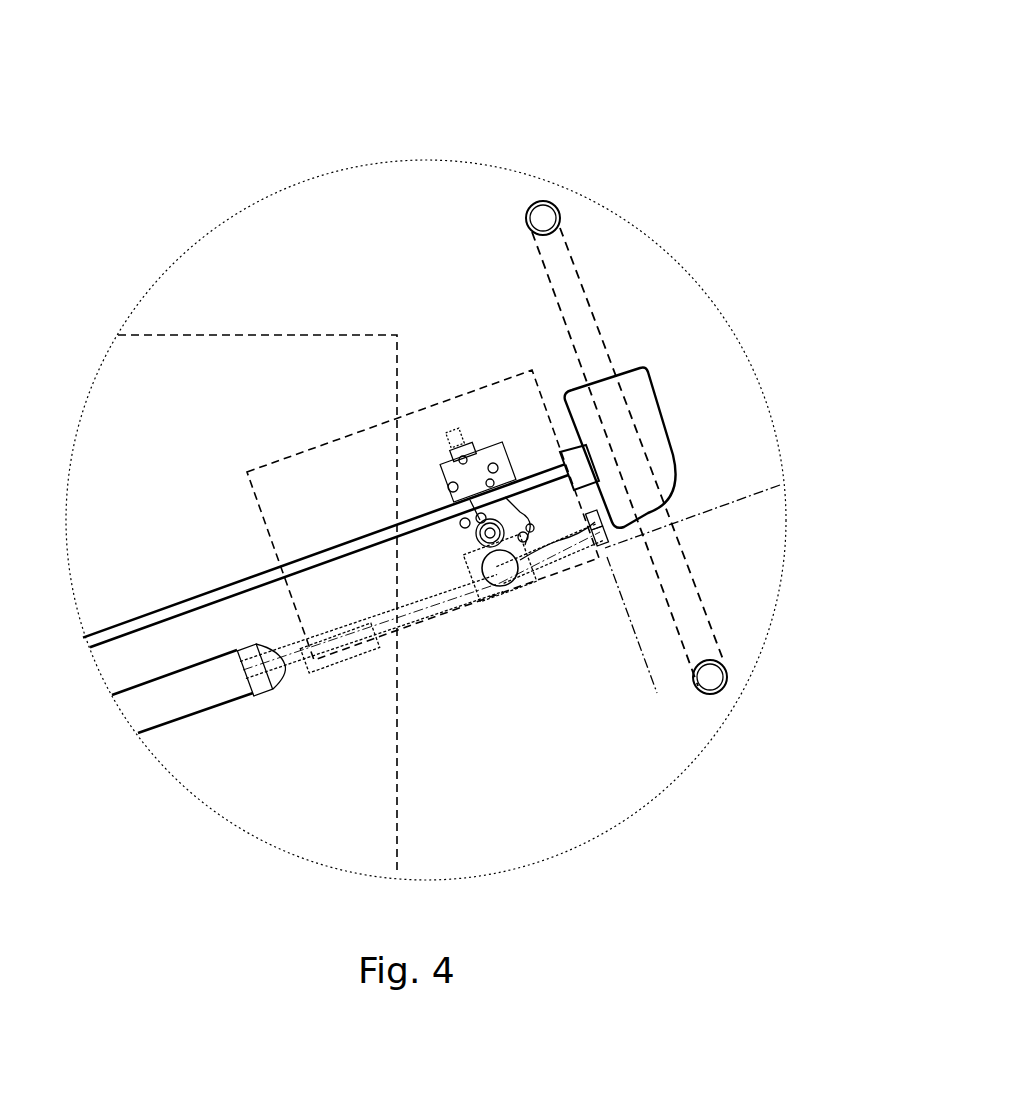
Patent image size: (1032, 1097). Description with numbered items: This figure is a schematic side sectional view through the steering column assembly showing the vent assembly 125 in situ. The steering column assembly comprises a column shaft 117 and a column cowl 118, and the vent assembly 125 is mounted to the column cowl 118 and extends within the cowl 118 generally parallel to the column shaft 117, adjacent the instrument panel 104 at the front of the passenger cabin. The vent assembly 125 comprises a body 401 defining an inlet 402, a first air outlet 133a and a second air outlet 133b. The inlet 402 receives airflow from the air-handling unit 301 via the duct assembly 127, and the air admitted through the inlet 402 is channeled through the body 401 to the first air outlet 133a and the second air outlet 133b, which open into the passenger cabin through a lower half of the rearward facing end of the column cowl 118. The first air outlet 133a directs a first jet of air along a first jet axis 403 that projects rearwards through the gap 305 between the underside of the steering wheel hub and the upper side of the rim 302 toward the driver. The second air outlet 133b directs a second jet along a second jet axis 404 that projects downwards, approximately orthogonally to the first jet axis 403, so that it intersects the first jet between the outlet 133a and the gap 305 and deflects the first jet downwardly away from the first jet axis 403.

The instrument panel 104 is at (233, 335).
The column shaft 117 is at (188, 608).
The column cowl 118 is at (460, 395).
The vent assembly 125 is at (510, 652).
The duct assembly 127 is at (153, 700).
The first air outlet 133a is at (608, 557).
The second air outlet 133b is at (610, 543).
The air-handling unit 301 is at (635, 390).
The rim 302 is at (543, 218).
The gap 305 is at (700, 582).
The body 401 is at (527, 587).
The inlet 402 is at (240, 672).
The first jet axis 403 is at (765, 485).
The second jet axis 404 is at (657, 680).